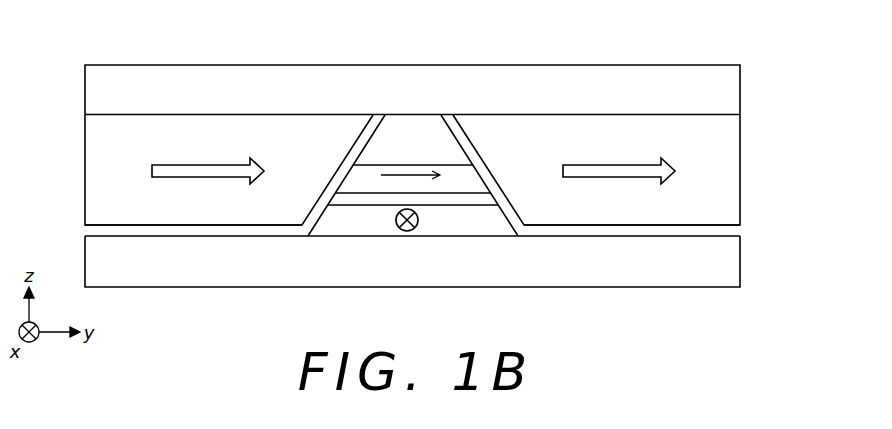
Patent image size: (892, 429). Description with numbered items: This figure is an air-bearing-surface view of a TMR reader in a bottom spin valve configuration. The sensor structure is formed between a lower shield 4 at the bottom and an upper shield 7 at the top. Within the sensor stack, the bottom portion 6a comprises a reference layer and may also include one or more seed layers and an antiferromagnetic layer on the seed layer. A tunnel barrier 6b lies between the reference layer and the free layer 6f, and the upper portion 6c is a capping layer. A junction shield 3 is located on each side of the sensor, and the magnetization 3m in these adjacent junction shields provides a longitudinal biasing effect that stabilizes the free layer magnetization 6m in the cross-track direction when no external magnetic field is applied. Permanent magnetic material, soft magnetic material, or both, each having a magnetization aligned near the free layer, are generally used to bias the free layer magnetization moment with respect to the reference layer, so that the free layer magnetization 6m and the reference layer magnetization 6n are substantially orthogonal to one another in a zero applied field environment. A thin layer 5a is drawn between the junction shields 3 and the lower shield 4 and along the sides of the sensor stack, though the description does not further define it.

The upper shield 7 is at (723, 86).
The junction shields (JSs) 3 is at (100, 183).
The magnetization 3m is at (413, 164).
The thin layer 5a is at (100, 232).
The lower shield 4 is at (723, 264).
The upper portion 6c is at (435, 128).
The FL magnetization 6m is at (405, 173).
The free layer (FL) 6f is at (363, 182).
The tunnel barrier 6b is at (482, 200).
The bottom portion 6a is at (452, 222).
The RL magnetization 6n is at (408, 232).